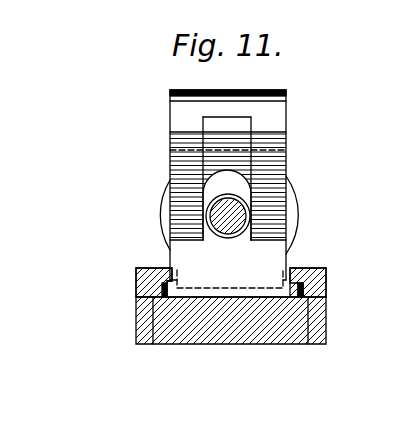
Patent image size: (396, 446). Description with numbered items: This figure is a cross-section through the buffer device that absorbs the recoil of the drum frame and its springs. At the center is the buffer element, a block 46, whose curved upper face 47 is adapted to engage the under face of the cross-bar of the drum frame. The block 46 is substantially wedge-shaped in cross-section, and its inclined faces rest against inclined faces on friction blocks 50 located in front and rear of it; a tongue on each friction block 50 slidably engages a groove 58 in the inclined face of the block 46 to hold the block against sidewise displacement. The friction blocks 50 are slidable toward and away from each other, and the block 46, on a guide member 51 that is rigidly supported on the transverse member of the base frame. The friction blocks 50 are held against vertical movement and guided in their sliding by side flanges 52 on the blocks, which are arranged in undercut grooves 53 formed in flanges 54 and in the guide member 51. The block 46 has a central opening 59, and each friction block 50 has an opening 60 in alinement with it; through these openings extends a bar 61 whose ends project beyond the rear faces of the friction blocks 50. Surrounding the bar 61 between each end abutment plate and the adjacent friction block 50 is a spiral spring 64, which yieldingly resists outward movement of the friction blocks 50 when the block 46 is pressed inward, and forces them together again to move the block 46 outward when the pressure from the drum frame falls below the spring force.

The block 46 is at (270, 118).
The curved upper face 47 is at (262, 90).
The friction blocks 50 is at (270, 258).
The guide member 51 is at (245, 330).
The side flanges 52 is at (162, 298).
The undercut grooves 53 is at (160, 290).
The flanges 54 is at (157, 268).
The groove 58 is at (233, 140).
The central opening 59 is at (235, 180).
The opening 60 is at (222, 243).
The bar 61 is at (233, 216).
The spiral spring 64 is at (164, 203).